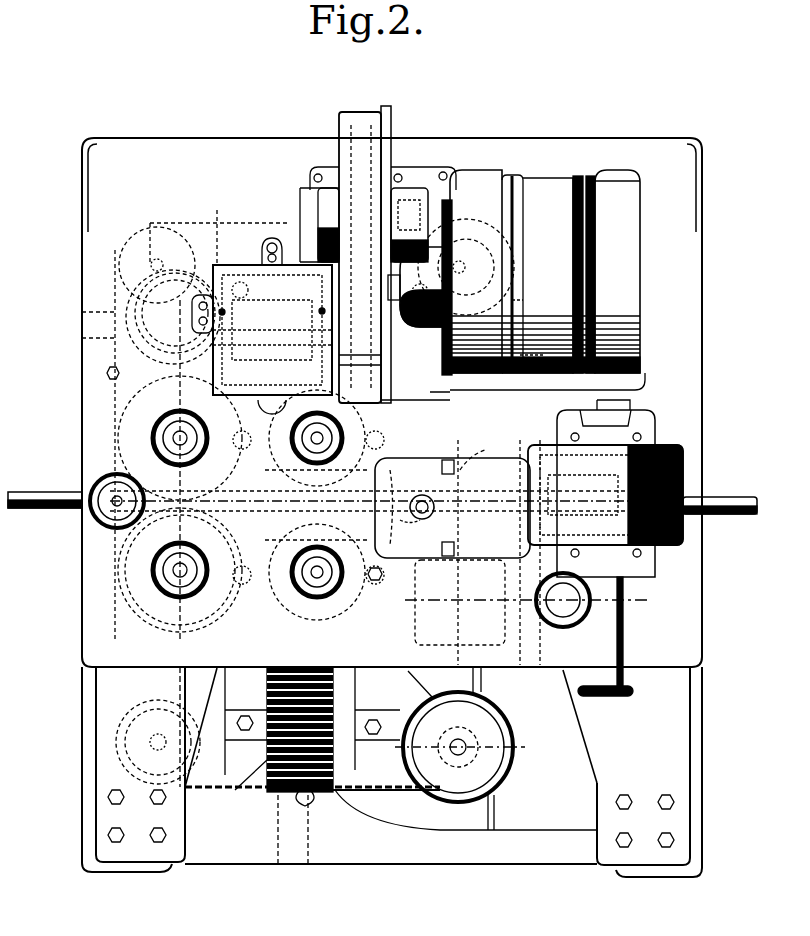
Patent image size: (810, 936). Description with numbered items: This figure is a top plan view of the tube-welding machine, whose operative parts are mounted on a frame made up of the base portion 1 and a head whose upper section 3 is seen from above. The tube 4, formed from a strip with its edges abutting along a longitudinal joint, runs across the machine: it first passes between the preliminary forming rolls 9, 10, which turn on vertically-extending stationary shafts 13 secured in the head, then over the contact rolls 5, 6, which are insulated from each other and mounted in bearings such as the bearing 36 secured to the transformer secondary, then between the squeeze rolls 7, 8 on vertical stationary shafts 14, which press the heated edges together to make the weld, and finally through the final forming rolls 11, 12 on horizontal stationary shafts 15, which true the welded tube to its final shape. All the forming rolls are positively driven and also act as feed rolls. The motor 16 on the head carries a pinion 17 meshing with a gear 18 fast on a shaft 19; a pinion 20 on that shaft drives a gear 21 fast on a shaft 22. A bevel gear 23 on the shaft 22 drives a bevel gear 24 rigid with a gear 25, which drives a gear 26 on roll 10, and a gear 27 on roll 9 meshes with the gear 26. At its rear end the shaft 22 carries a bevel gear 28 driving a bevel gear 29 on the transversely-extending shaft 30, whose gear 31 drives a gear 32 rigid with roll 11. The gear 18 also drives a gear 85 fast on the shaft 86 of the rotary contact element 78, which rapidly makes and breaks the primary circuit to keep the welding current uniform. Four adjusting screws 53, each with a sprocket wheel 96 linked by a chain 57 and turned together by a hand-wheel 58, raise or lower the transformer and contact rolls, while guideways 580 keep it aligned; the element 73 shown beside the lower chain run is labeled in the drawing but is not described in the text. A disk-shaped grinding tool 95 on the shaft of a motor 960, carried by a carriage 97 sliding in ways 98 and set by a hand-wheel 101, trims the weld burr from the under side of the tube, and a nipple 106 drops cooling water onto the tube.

The base portion 1 is at (676, 720).
The head section 3 is at (700, 616).
The tube 4 is at (62, 510).
The contact roll 5 is at (392, 492).
The contact roll 6 is at (402, 520).
The squeeze roll 7 is at (442, 465).
The squeeze roll 8 is at (375, 592).
The preliminary forming roll 9 is at (122, 598).
The preliminary forming roll 10 is at (118, 410).
The final forming roll 11 is at (690, 533).
The final forming roll 12 is at (179, 543).
The stationary shafts 13 is at (178, 438).
The stationary shafts 14 is at (310, 438).
The stationary shafts 15 is at (650, 422).
The motor 16 is at (566, 190).
The pinion 17 is at (335, 262).
The gear 18 is at (339, 137).
The shaft 19 is at (342, 165).
The pinion 20 is at (402, 236).
The gear 21 is at (432, 398).
The shaft 22 is at (262, 320).
The bevel gear 23 is at (262, 245).
The bevel gear 24 is at (120, 312).
The gear 25 is at (118, 340).
The gear 26 is at (108, 375).
The gear 27 is at (110, 630).
The bevel gear 28 is at (514, 300).
The bevel gear 29 is at (535, 355).
The transversely-extending shaft 30 is at (562, 430).
The gear 31 is at (462, 468).
The gear 32 is at (662, 456).
The bearing 36 is at (268, 768).
The adjusting screw 53 is at (152, 240).
The chain 57 is at (412, 792).
The hand-wheel 58 is at (505, 784).
The spring 73 is at (245, 775).
The rotary contact element 78 is at (302, 372).
The gear 85 is at (321, 310).
The shaft 86 is at (200, 325).
The grinding or abrading tool 95 is at (442, 549).
The sprocket wheel 96 is at (115, 262).
The carriage or slide 97 is at (519, 553).
The ways 98 is at (508, 553).
The hand-wheel 101 is at (586, 612).
The nipple 106 is at (424, 494).
The guideways 580 is at (310, 864).
The motor 960 is at (450, 648).